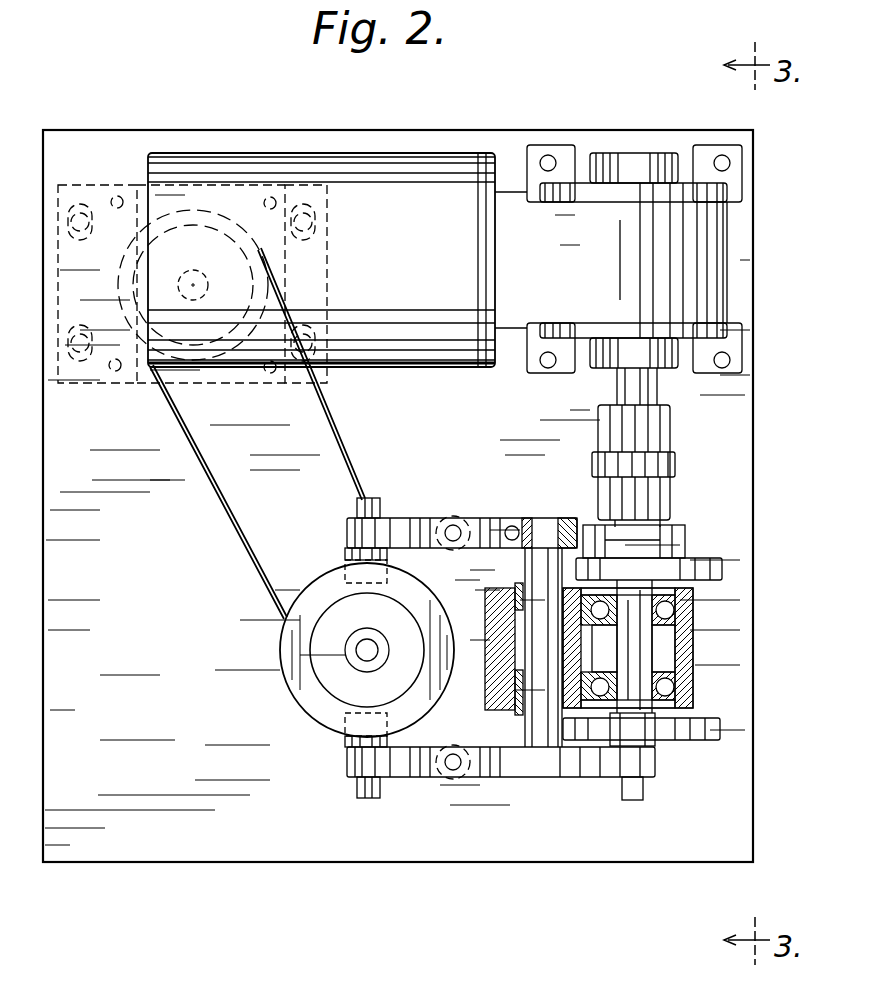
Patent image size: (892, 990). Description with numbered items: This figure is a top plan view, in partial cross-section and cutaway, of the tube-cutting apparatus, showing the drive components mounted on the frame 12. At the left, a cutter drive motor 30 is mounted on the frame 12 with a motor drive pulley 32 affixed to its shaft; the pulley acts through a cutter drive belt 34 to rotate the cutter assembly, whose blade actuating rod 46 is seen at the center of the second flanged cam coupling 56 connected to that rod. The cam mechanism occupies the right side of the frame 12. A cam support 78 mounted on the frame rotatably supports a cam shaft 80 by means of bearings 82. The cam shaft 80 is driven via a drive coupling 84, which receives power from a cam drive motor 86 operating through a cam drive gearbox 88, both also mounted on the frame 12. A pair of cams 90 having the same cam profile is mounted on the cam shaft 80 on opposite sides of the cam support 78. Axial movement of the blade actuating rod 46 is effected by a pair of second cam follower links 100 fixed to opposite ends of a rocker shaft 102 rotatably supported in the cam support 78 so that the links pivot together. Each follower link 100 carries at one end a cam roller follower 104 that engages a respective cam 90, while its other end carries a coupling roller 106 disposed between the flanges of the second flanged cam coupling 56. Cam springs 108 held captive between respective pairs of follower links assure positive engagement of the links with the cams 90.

The frame 12 is at (145, 680).
The cutter drive motor 30 is at (130, 386).
The motor drive pulley 32 is at (130, 252).
The cutter drive belt 34 is at (216, 497).
The blade actuating rod 46 is at (357, 658).
The second flanged cam coupling 56 is at (285, 680).
The cam support 78 is at (690, 648).
The cam shaft 80 is at (645, 655).
The bearings 82 is at (685, 613).
The drive coupling 84 is at (605, 420).
The cam drive motor 86 is at (425, 235).
The cam drive gearbox 88 is at (685, 245).
The cams 90 is at (680, 565).
The second cam follower links 100 is at (398, 518).
The rocker shaft 102 is at (535, 560).
The cam roller follower 104 is at (648, 737).
The coupling roller 106 is at (345, 553).
The cam springs 108 is at (455, 518).